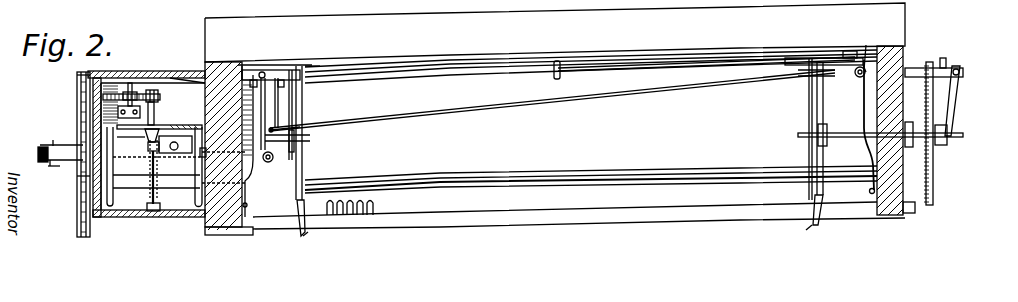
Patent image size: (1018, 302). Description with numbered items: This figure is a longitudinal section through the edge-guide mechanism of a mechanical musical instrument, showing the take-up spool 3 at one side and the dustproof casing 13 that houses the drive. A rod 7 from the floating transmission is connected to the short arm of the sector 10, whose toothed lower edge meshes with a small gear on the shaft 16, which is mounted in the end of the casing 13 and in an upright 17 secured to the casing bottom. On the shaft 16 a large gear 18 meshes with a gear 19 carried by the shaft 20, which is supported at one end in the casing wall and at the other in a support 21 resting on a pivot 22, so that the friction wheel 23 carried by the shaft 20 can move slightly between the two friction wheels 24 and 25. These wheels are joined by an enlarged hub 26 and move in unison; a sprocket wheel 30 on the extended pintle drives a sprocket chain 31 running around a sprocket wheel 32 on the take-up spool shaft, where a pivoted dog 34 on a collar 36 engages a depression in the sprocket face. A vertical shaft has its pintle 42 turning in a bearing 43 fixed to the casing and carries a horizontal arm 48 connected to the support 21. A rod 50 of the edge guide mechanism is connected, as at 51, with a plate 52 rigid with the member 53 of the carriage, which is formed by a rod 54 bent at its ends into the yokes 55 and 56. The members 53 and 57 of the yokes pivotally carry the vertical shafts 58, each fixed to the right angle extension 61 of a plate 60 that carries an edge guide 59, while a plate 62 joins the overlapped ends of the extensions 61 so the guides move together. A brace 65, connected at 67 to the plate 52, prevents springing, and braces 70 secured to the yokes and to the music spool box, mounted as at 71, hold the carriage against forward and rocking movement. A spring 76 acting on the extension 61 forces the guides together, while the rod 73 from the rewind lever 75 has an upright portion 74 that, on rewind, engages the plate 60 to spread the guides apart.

The take-up spool 3 is at (555, 116).
The rod 7 is at (243, 68).
The sector 10 is at (160, 72).
The dustproof casing 13 is at (178, 78).
The shaft 16 is at (103, 97).
The upright 17 is at (118, 113).
The large gear 18 is at (100, 106).
The gear 19 is at (158, 97).
The shaft 20 is at (155, 116).
The support 21 is at (149, 147).
The pivot 22 is at (168, 155).
The friction wheel 23 is at (191, 125).
The friction wheel 24 is at (249, 190).
The friction wheel 25 is at (107, 187).
The enlarged hub 26 is at (128, 176).
The sprocket wheel 30 is at (77, 176).
The sprocket chain 31 is at (78, 203).
The sprocket wheel 32 is at (77, 75).
The dog 34 is at (40, 161).
The collar 36 is at (53, 144).
The pintle 42 is at (155, 213).
The bearing 43 is at (161, 212).
The horizontal arm 48 is at (152, 192).
The rod 50 is at (268, 162).
The connection 51 is at (295, 140).
The plate 52 is at (279, 103).
The yoke member 53 is at (286, 80).
The rod 54 is at (612, 75).
The yoke 55 is at (264, 70).
The yoke 56 is at (881, 47).
The yoke member 57 is at (861, 58).
The vertical shaft 58 is at (312, 66).
The edge guide 59 is at (306, 231).
The plate 60 is at (304, 104).
The right angle extension 61 is at (392, 80).
The plate 62 is at (558, 61).
The brace 65 is at (428, 113).
The brace connection 67 is at (335, 119).
The brace 70 is at (302, 119).
The brace mounting 71 is at (867, 45).
The rod 73 is at (936, 150).
The upright portion 74 is at (806, 135).
The rewind lever 75 is at (953, 108).
The spring 76 is at (806, 76).